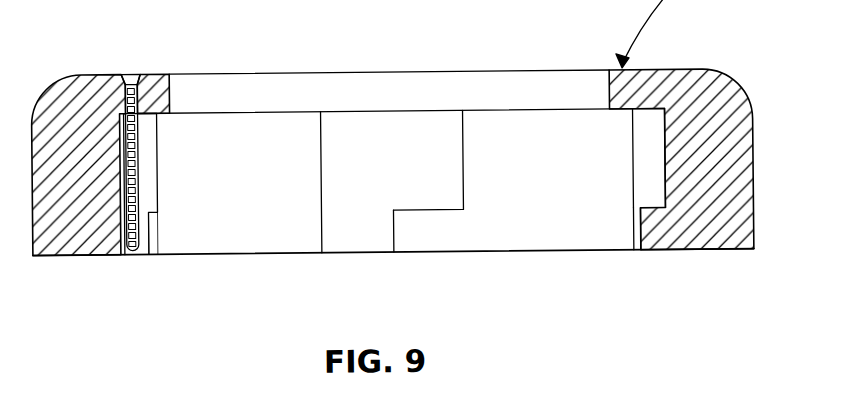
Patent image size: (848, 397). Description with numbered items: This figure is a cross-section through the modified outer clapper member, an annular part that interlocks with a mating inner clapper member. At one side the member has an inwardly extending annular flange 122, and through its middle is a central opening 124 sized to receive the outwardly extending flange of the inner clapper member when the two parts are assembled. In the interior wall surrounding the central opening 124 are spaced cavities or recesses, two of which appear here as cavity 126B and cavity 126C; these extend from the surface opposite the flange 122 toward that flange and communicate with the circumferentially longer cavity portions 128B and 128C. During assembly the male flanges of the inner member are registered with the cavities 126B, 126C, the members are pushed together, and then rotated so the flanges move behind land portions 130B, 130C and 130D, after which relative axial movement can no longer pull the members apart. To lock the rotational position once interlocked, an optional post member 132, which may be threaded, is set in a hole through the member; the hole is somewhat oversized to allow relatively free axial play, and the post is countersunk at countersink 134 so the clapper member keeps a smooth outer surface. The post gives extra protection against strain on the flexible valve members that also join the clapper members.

The annular flange 122 is at (633, 89).
The central opening 124 is at (256, 124).
The cavity 126B is at (637, 234).
The cavity 126C is at (344, 242).
The cavity portion 128B is at (647, 165).
The cavity portion 128C is at (372, 130).
The land portion 130B is at (648, 252).
The land portion 130C is at (423, 238).
The land portion 130D is at (152, 235).
The post member 132 is at (141, 182).
The countersink 134 is at (134, 70).